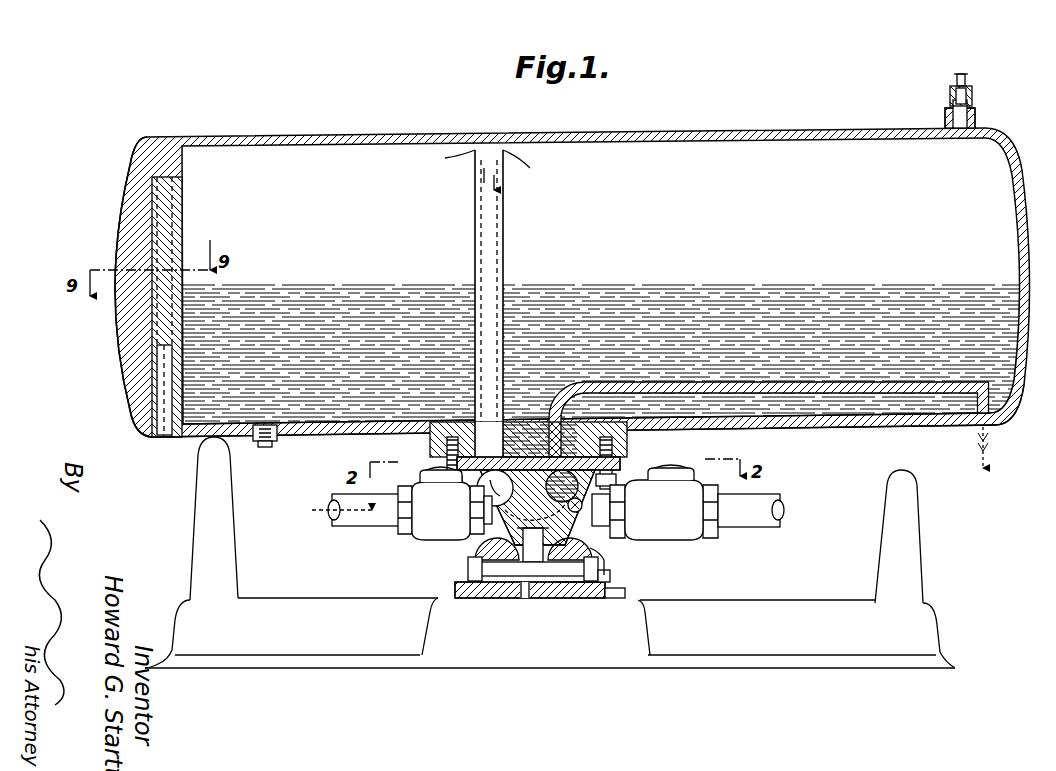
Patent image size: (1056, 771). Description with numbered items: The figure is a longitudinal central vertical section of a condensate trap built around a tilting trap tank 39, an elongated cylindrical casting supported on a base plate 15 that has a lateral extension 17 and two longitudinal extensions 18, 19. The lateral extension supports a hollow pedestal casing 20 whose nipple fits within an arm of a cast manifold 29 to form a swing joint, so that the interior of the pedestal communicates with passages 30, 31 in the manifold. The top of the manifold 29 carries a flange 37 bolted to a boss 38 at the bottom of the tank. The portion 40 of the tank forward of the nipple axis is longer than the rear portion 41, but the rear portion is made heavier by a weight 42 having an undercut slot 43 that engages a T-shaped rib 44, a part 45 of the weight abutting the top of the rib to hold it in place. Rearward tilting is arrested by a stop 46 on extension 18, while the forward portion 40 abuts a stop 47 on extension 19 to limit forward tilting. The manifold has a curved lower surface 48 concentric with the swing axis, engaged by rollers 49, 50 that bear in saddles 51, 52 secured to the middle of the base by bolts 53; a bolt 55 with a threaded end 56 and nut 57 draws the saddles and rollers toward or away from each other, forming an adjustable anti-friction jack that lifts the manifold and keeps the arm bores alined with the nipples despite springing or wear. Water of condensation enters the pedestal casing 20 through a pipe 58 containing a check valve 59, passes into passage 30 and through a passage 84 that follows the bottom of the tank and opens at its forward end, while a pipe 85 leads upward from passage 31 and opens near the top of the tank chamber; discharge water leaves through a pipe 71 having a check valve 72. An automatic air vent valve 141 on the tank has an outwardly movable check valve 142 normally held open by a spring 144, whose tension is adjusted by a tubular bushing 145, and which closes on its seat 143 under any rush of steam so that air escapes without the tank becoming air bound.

The base plate 15 is at (550, 678).
The lateral extension 17 is at (535, 656).
The longitudinal extension 18 is at (295, 654).
The longitudinal extension 19 is at (773, 654).
The hollow pedestal casing 20 is at (615, 490).
The manifold 29 is at (650, 498).
The passage 30 is at (602, 540).
The passage 31 is at (410, 496).
The flange 37 is at (612, 465).
The boss 38 is at (445, 447).
The trap tank 39 is at (1005, 422).
The forward portion of tank 40 is at (797, 425).
The rear portion of tank 41 is at (312, 437).
The weight 42 is at (140, 373).
The undercut slot 43 is at (160, 395).
The rib 44 is at (160, 318).
The part of weight 45 is at (163, 137).
The stop 46 is at (196, 525).
The stop 47 is at (906, 535).
The lower surface portion 48 is at (470, 513).
The roller 49 is at (490, 542).
The roller 50 is at (592, 555).
The saddle 51 is at (498, 590).
The saddle 52 is at (575, 588).
The bolt 53 is at (612, 596).
The bolt 55 is at (478, 568).
The screw threaded end 56 is at (586, 584).
The nut 57 is at (606, 575).
The pipe 58 is at (376, 526).
The check valve 59 is at (416, 535).
The pipe 71 is at (754, 522).
The check valve 72 is at (680, 522).
The passage 84 is at (830, 395).
The pipe 85 is at (503, 220).
The automatic air vent valve 141 is at (982, 107).
The check valve 142 is at (952, 102).
The seat 143 is at (955, 95).
The spring 144 is at (970, 95).
The adjustable tubular bushing 145 is at (962, 78).